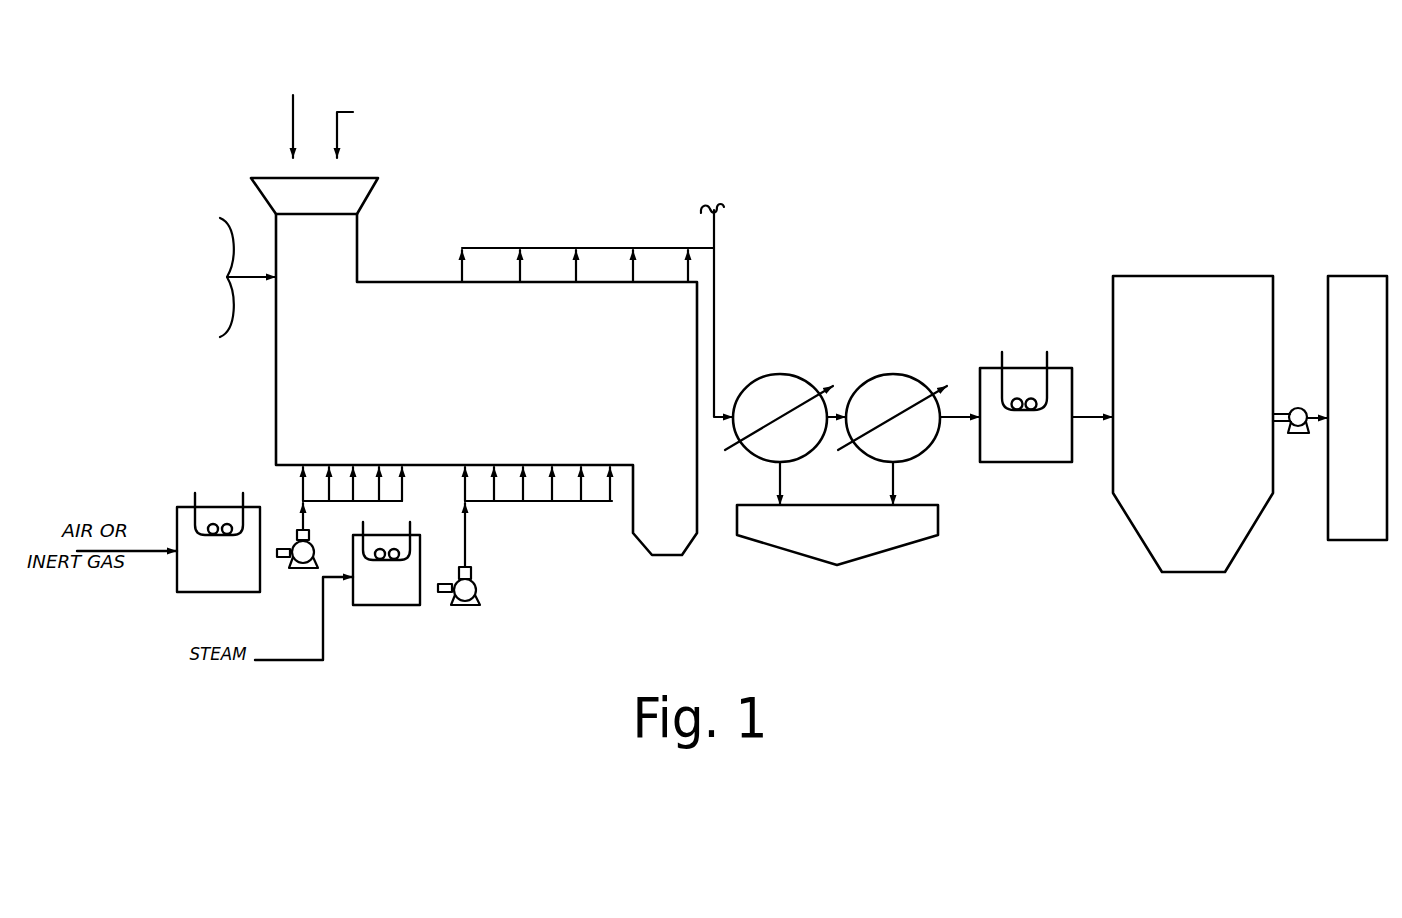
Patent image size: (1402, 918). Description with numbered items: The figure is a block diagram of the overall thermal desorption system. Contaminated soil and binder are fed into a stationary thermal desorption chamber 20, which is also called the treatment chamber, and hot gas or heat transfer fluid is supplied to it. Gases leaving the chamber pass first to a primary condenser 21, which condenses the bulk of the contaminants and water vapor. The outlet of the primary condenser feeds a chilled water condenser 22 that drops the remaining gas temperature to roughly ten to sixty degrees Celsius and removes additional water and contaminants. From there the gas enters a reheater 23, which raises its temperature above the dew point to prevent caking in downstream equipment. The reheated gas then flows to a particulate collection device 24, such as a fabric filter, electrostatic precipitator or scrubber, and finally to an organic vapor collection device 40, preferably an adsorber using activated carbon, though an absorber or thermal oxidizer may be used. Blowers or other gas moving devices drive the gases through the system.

The thermal desorption chamber 20 is at (388, 282).
The primary condenser 21 is at (786, 378).
The chilled water condenser 22 is at (896, 378).
The reheater 23 is at (992, 378).
The particulate collection device 24 is at (1135, 282).
The organic vapor collection device 40 is at (1342, 278).